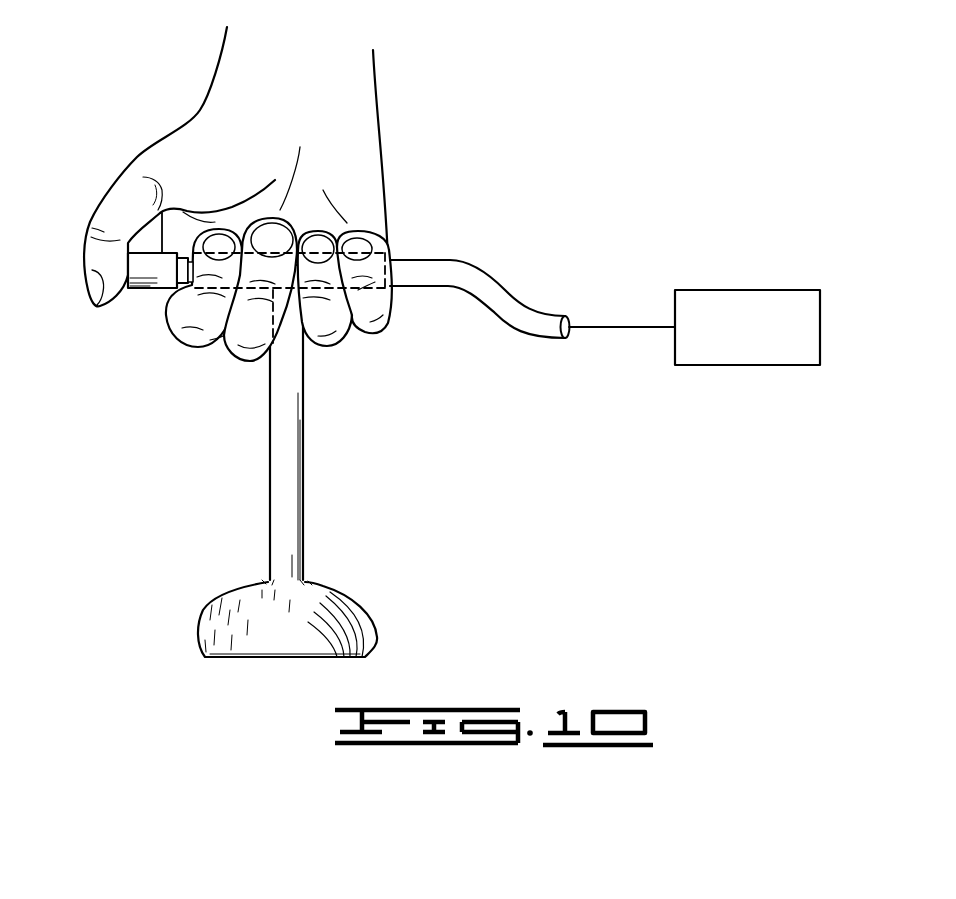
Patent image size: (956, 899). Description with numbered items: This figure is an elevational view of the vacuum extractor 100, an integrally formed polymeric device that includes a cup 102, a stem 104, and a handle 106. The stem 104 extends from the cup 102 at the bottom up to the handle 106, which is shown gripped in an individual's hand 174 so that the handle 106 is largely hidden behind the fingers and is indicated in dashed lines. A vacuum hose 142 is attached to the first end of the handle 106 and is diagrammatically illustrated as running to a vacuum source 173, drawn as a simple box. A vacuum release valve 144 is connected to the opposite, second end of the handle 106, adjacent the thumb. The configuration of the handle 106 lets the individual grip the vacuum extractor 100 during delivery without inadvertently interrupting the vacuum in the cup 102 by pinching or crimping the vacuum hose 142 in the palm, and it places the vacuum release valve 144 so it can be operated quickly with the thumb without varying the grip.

The vacuum extractor 100 is at (320, 459).
The cup 102 is at (368, 610).
The stem 104 is at (272, 446).
The handle 106 is at (320, 253).
The vacuum hose 142 is at (493, 285).
The vacuum release valve 144 is at (143, 290).
The vacuum source 173 is at (730, 290).
The hand 174 is at (373, 103).